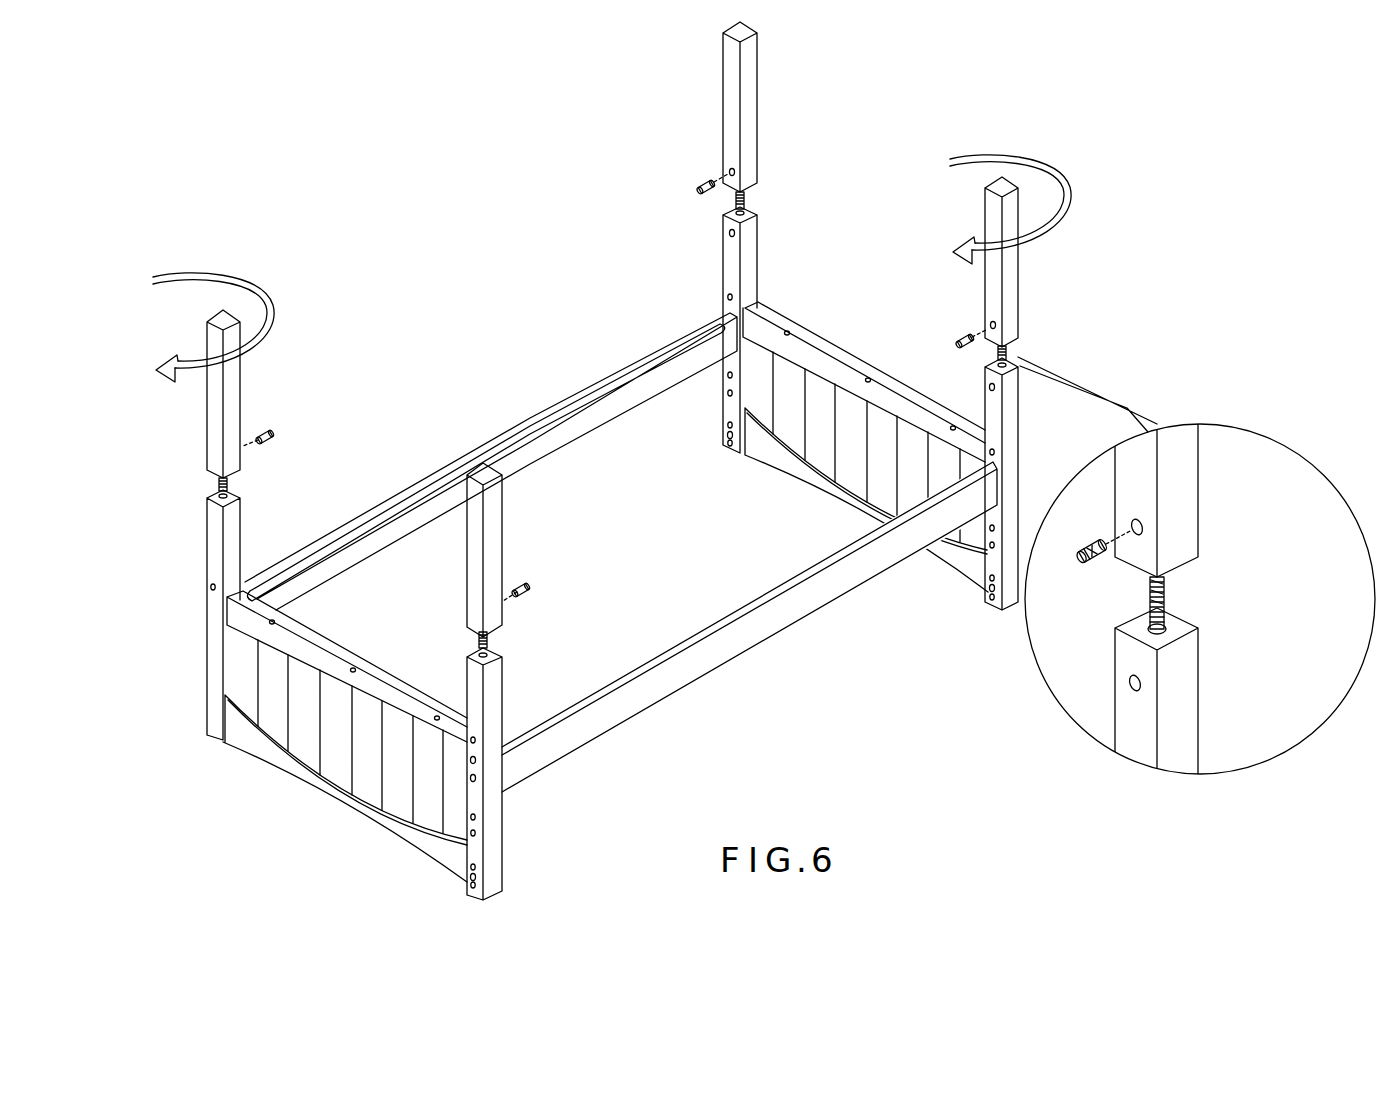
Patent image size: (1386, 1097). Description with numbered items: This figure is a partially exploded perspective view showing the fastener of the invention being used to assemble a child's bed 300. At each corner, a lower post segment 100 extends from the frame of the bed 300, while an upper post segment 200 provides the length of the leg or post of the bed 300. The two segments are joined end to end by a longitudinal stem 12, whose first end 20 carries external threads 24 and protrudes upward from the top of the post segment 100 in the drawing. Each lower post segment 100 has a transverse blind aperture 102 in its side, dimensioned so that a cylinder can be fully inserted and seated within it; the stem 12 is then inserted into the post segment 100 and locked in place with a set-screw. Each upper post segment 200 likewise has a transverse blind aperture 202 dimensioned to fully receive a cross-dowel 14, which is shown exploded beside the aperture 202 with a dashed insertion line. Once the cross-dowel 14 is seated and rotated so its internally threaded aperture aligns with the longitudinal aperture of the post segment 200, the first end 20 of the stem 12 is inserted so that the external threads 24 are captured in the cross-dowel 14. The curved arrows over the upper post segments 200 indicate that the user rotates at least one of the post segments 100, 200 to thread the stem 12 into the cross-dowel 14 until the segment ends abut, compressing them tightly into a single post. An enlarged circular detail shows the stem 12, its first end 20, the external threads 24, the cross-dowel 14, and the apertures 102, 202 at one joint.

The post segment 100 is at (232, 547).
The post segment 200 is at (232, 375).
The longitudinal stem 12 is at (233, 492).
The cross-dowel 14 is at (274, 436).
The transverse blind aperture 102 is at (728, 235).
The transverse blind aperture 202 is at (728, 170).
The first end 20 is at (1148, 590).
The external threads 24 is at (1165, 585).
The bed 300 is at (775, 635).